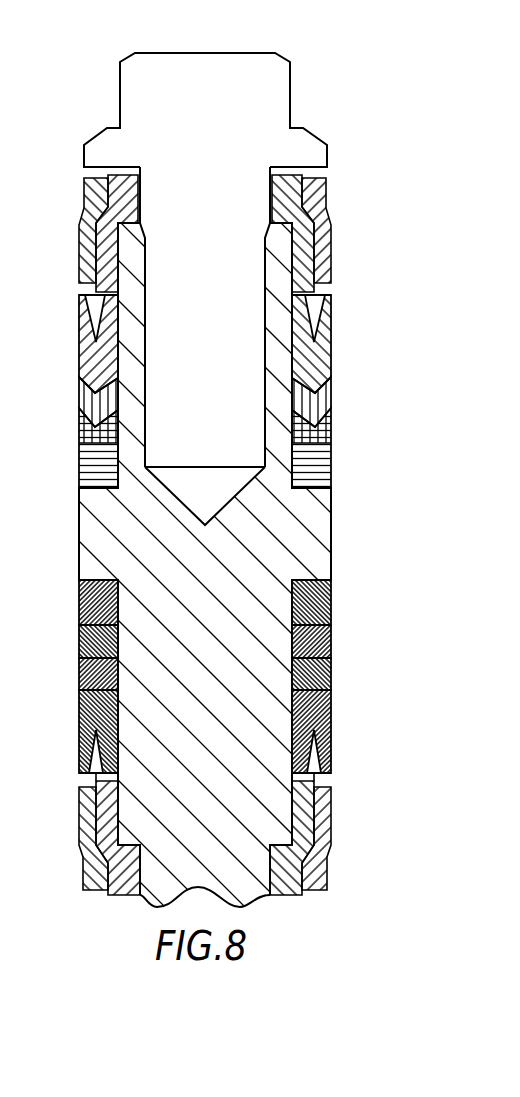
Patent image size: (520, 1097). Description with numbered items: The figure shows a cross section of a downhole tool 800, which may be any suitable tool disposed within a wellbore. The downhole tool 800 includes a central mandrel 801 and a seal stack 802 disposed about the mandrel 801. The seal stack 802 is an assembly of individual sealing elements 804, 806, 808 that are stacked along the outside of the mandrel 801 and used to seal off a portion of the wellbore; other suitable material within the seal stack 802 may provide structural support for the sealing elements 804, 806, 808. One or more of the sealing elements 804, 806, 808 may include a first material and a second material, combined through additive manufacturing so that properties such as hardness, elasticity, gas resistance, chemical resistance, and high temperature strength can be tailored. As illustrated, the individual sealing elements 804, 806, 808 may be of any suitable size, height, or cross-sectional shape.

The downhole tool 800 is at (292, 548).
The mandrel 801 is at (331, 530).
The seal stack 802 is at (292, 391).
The sealing element 804 is at (331, 333).
The sealing element 806 is at (331, 397).
The sealing element 808 is at (331, 467).